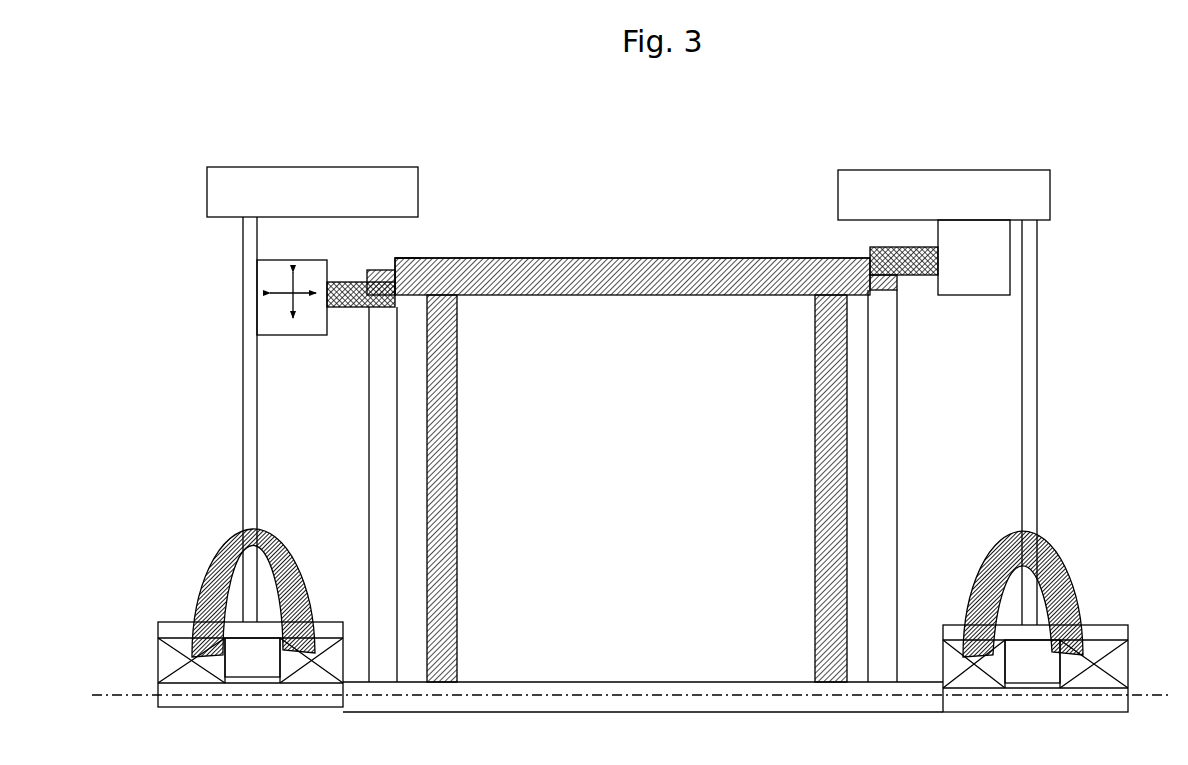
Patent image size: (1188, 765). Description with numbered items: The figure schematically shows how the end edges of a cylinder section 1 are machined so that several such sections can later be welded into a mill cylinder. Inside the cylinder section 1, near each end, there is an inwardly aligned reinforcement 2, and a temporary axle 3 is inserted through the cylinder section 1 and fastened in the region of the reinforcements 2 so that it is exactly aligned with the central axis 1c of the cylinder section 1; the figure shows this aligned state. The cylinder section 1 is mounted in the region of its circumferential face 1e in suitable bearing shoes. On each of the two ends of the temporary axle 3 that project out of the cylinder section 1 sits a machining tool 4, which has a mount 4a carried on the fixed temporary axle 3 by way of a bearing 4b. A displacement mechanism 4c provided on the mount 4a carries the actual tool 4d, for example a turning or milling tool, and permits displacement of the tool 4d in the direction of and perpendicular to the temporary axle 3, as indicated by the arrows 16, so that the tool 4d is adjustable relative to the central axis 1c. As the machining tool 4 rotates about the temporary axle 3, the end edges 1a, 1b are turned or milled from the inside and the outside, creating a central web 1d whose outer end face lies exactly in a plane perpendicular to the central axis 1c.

The cylinder section 1 is at (575, 227).
The end edge 1a is at (375, 252).
The end edge 1b is at (888, 293).
The central axis 1c is at (122, 697).
The central web 1d is at (388, 268).
The circumferential face 1e is at (723, 257).
The reinforcement 2 is at (812, 468).
The temporary axle 3 is at (713, 695).
The machining tool 4 is at (213, 350).
The mount 4a is at (247, 392).
The bearing 4b is at (220, 683).
The displacement mechanism 4c is at (280, 275).
The tool 4d is at (335, 281).
The arrows 16 is at (296, 300).